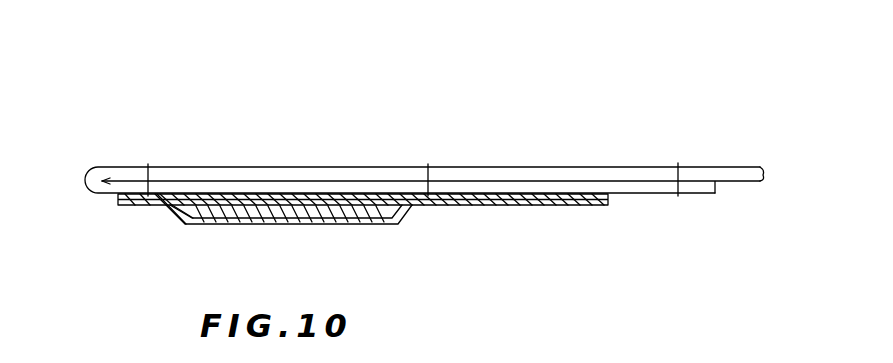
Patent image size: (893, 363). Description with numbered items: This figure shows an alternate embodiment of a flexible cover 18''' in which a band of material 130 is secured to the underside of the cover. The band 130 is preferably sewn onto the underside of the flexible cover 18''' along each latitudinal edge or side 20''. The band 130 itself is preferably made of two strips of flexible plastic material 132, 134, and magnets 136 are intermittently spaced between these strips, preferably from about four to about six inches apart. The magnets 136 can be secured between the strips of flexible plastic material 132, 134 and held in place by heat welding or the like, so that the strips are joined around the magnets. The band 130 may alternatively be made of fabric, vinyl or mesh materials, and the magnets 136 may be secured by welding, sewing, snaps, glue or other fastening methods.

The latitudinal edge or side 20'' is at (424, 140).
The flexible cover 18''' is at (431, 143).
The strip of flexible plastic material 134 is at (392, 196).
The strip of flexible plastic material 132 is at (390, 224).
The magnets 136 is at (273, 213).
The band of material 130 is at (178, 222).